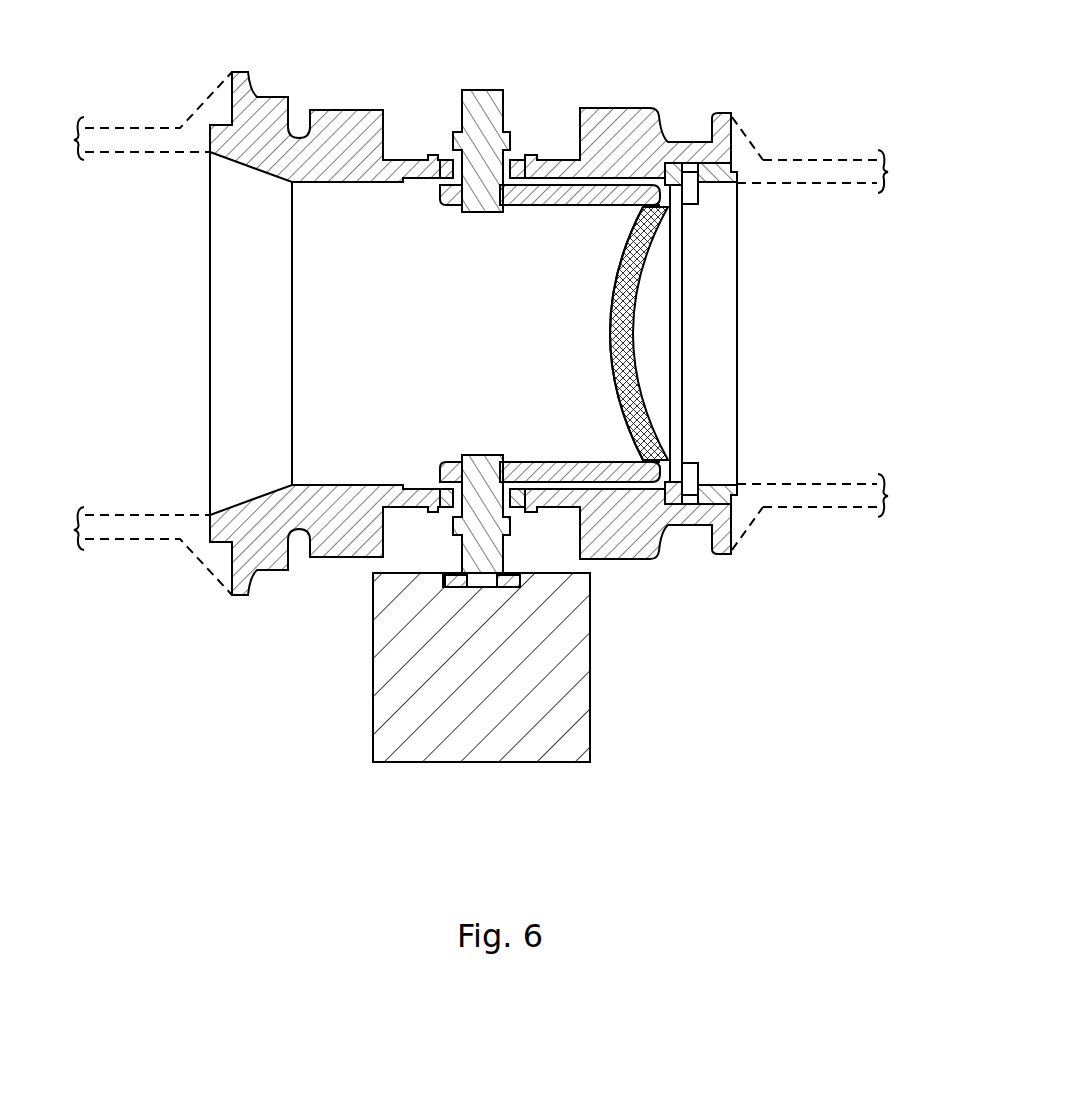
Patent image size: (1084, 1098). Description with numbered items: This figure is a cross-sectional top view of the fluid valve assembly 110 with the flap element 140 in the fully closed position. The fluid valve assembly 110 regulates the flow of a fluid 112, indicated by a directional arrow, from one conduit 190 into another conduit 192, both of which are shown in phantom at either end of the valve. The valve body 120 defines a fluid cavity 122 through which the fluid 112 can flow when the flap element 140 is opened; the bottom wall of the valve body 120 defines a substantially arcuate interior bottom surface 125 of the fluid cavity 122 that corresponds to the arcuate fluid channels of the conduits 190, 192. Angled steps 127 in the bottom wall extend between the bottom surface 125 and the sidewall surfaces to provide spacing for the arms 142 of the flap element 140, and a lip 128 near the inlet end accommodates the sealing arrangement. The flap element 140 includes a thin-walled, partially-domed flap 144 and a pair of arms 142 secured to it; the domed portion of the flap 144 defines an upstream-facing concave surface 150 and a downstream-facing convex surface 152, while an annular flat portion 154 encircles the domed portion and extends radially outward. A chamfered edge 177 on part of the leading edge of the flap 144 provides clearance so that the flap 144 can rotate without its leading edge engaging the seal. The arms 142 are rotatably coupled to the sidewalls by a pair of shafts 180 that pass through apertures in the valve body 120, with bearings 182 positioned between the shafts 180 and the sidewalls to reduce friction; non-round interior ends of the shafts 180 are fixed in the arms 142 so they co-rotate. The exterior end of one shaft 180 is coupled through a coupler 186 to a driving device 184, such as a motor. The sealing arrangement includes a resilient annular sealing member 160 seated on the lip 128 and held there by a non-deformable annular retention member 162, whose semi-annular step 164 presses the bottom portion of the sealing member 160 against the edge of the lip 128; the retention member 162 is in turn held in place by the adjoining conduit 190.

The fluid valve assembly 110 is at (733, 77).
The fluid 112 is at (813, 339).
The valve body 120 is at (627, 108).
The fluid cavity 122 is at (486, 344).
The interior bottom surface 125 is at (312, 365).
The angled steps 127 is at (592, 207).
The lip 128 is at (692, 162).
The flap element 140 is at (457, 211).
The arms 142 is at (535, 207).
The flap 144 is at (608, 301).
The concave surface 150 is at (633, 356).
The convex surface 152 is at (613, 368).
The flat portion 154 is at (668, 195).
The sealing member 160 is at (676, 388).
The retention member 162 is at (698, 305).
The semi-annular step 164 is at (697, 192).
The chamfered edge 177 is at (663, 185).
The shafts 180 is at (485, 213).
The bearings 182 is at (452, 176).
The driving device 184 is at (591, 668).
The coupler 186 is at (523, 583).
The conduit 190 is at (843, 160).
The conduit 192 is at (107, 128).